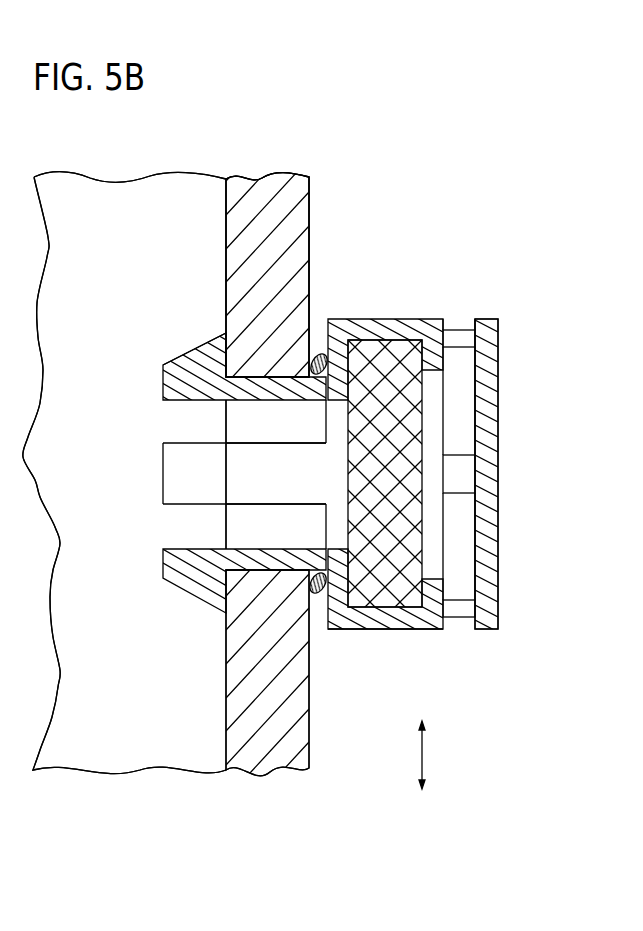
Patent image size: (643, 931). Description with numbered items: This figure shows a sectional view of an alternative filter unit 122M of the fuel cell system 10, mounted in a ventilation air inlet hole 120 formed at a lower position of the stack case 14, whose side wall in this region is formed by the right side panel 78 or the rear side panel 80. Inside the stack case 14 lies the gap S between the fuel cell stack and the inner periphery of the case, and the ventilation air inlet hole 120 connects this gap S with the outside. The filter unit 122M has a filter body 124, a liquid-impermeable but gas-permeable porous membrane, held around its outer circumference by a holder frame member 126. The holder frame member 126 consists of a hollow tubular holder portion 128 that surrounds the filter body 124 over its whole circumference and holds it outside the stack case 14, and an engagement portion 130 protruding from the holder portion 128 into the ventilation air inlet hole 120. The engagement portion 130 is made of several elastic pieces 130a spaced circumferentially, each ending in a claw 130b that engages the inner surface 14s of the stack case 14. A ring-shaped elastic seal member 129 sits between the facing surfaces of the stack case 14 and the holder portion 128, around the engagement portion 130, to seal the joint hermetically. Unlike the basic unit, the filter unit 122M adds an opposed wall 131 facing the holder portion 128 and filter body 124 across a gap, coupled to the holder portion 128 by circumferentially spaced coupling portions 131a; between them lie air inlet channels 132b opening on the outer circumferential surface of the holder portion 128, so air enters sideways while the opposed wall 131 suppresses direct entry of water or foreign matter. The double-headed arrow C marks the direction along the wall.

The fuel cell system 10 is at (110, 129).
The gap S is at (153, 203).
The stack case 14 is at (315, 196).
The right side panel 78 is at (294, 224).
The rear side panel 80 is at (267, 275).
The inner surface of the stack case 14s is at (227, 715).
The engagement portion 130 is at (257, 383).
The elastic pieces 130a is at (267, 452).
The claw 130b is at (207, 345).
The ventilation air inlet hole 120 is at (267, 570).
The seal member 129 is at (317, 352).
The holder portion 128 is at (388, 338).
The holder frame member 126 is at (396, 637).
The filter body 124 is at (428, 506).
The opposed wall 131 is at (492, 393).
The coupling portions 131a is at (460, 338).
The air inlet channel 132b is at (468, 325).
The filter unit 122M is at (508, 349).
The direction C is at (429, 755).